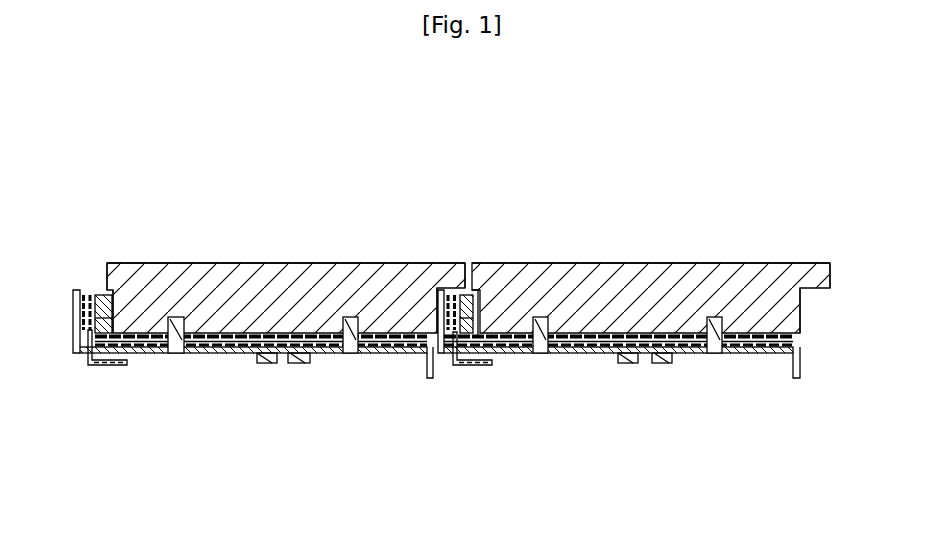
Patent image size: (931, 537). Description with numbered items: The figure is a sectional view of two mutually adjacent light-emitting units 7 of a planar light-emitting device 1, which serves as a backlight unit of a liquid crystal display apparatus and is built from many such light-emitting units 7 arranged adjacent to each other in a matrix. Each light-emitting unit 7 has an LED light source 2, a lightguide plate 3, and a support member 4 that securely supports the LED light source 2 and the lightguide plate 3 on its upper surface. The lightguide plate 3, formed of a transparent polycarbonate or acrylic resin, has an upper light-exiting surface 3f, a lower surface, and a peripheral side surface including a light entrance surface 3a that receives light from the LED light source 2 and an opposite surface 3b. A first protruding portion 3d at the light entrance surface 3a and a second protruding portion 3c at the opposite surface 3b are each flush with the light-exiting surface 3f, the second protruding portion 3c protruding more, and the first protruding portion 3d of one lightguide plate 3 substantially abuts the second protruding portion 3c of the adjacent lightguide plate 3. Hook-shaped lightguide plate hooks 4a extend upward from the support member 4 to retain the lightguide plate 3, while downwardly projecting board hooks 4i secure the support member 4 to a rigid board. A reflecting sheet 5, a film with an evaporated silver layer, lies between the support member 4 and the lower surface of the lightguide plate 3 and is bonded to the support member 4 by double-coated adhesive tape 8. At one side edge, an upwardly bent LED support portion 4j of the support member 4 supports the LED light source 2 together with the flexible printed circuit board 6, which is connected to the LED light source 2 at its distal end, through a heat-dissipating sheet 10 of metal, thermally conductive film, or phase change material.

The planar light-emitting device 1 is at (441, 138).
The LED light source 2 is at (113, 312).
The lightguide plate 3 is at (308, 261).
The light entrance surface 3a is at (74, 322).
The opposite surface 3b is at (481, 306).
The second protruding portion 3c is at (474, 288).
The first protruding portion 3d is at (106, 294).
The light-exiting surface 3f is at (247, 263).
The support member 4 is at (331, 360).
The lightguide plate hook 4a is at (171, 318).
The board hook 4i is at (265, 365).
The LED support portion 4j is at (72, 352).
The reflecting sheet 5 is at (378, 355).
The flexible printed circuit board 6 is at (105, 366).
The light-emitting unit 7 is at (201, 219).
The double-coated adhesive tape 8 is at (200, 350).
The heat-dissipating sheet 10 is at (86, 296).